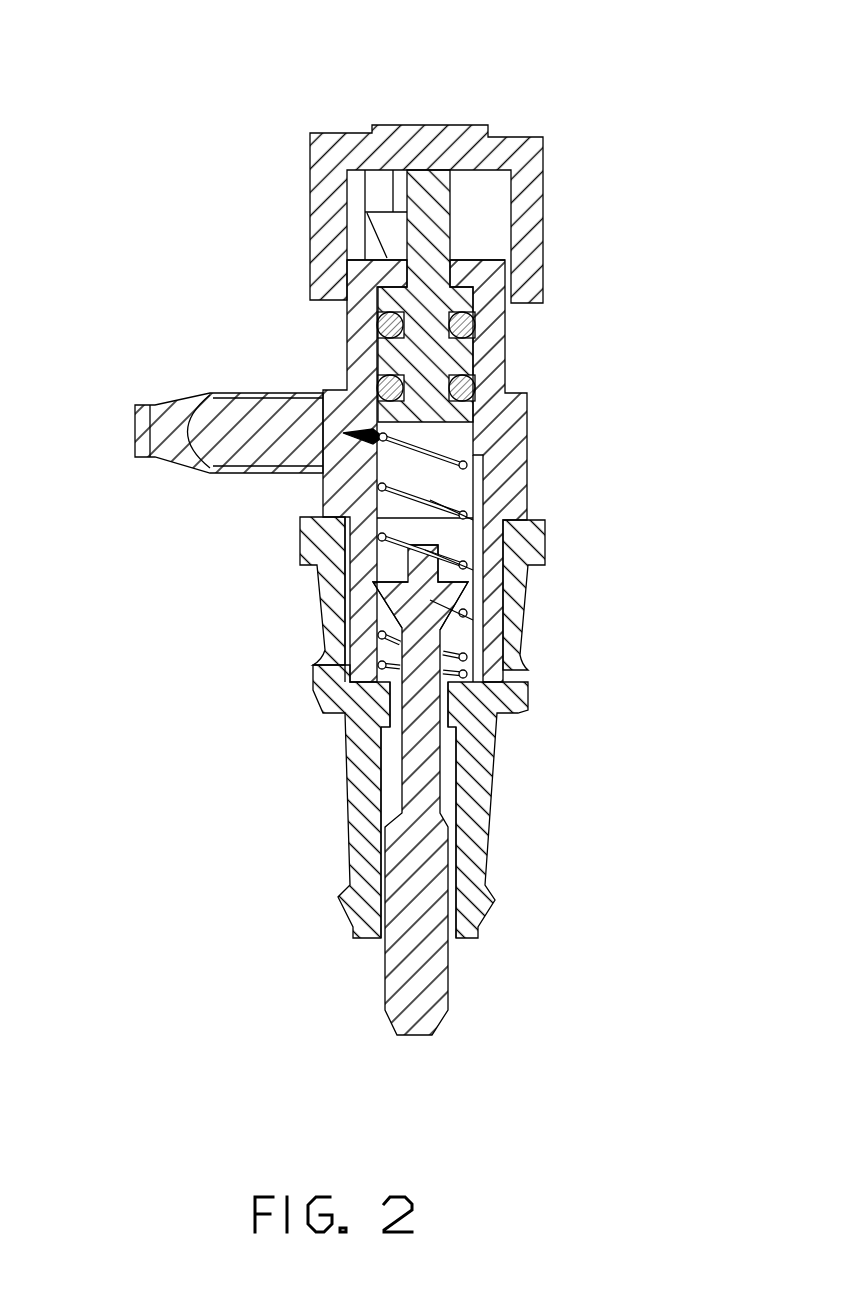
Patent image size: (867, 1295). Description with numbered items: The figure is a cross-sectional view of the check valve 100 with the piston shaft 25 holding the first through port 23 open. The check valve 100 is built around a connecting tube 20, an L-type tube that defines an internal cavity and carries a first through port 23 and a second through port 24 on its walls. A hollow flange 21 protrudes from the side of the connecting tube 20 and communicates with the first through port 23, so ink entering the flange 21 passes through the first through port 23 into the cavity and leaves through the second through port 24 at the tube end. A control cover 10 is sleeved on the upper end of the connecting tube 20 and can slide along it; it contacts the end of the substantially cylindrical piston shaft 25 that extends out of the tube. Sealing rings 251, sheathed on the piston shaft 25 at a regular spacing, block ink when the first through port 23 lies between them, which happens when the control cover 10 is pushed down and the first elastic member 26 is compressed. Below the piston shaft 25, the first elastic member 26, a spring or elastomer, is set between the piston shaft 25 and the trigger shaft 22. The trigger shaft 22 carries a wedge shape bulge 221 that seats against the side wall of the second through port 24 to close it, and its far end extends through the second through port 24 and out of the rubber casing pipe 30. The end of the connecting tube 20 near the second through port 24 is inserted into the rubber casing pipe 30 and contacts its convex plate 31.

The check valve 100 is at (641, 68).
The control cover 10 is at (327, 210).
The piston shaft 25 is at (445, 243).
The sealing rings 251 is at (490, 342).
The connecting tube 20 is at (503, 445).
The flange 21 is at (232, 400).
The first through port 23 is at (370, 447).
The wedge shape bulge 221 is at (403, 603).
The first elastic member 26 is at (498, 523).
The second through port 24 is at (447, 707).
The convex plate 31 is at (383, 710).
The rubber casing pipe 30 is at (477, 800).
The trigger shaft 22 is at (422, 968).